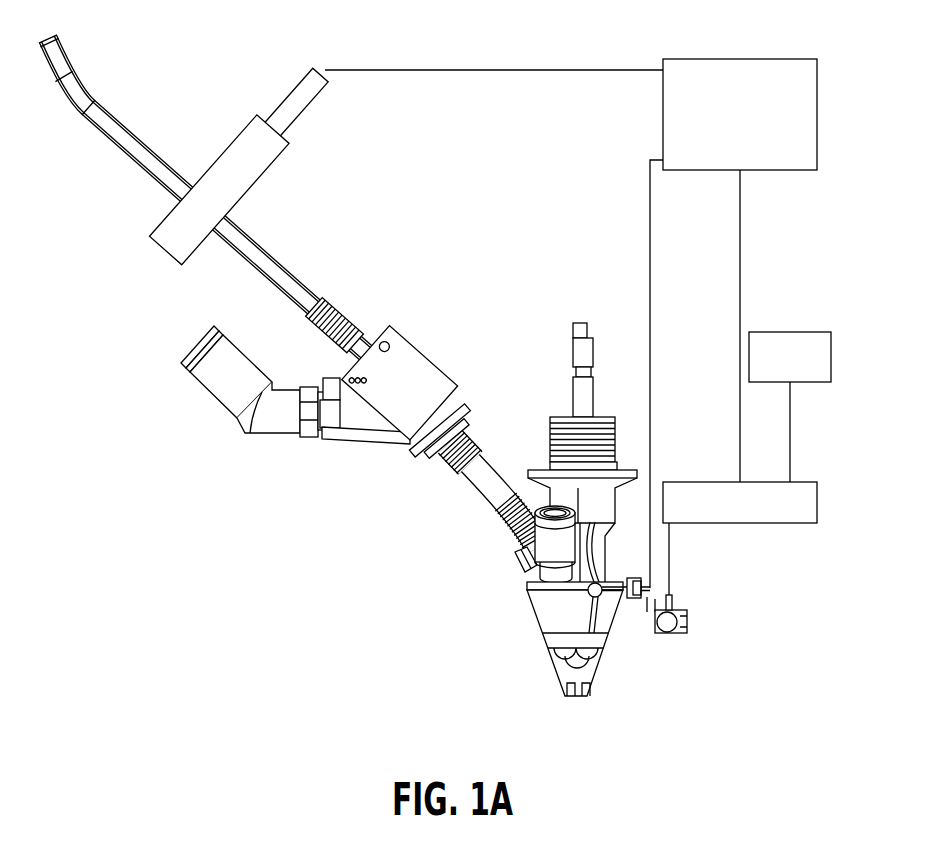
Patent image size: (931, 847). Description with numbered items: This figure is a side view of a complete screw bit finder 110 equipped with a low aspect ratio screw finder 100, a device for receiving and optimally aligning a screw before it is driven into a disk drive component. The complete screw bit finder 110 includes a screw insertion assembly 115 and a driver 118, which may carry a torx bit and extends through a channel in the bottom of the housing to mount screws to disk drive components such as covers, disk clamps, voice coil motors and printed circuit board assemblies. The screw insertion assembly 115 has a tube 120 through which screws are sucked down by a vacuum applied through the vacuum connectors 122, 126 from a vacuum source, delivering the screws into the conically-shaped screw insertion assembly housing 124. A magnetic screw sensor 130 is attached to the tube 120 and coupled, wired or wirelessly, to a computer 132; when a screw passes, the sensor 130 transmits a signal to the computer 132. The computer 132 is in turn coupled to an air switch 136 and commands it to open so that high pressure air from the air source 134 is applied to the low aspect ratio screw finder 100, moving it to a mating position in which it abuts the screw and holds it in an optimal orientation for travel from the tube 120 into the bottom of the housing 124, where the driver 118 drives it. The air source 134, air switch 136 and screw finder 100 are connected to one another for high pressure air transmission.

The low aspect ratio screw finder 100 is at (661, 674).
The complete screw bit finder 110 is at (482, 355).
The screw insertion assembly 115 is at (501, 542).
The driver 118 is at (573, 345).
The tube 120 is at (270, 252).
The vacuum connector 122 is at (361, 442).
The screw insertion assembly housing 124 is at (533, 618).
The vacuum connector 126 is at (516, 566).
The screw sensor 130 is at (240, 134).
The computer 132 is at (786, 57).
The air source 134 is at (811, 330).
The air switch 136 is at (799, 525).